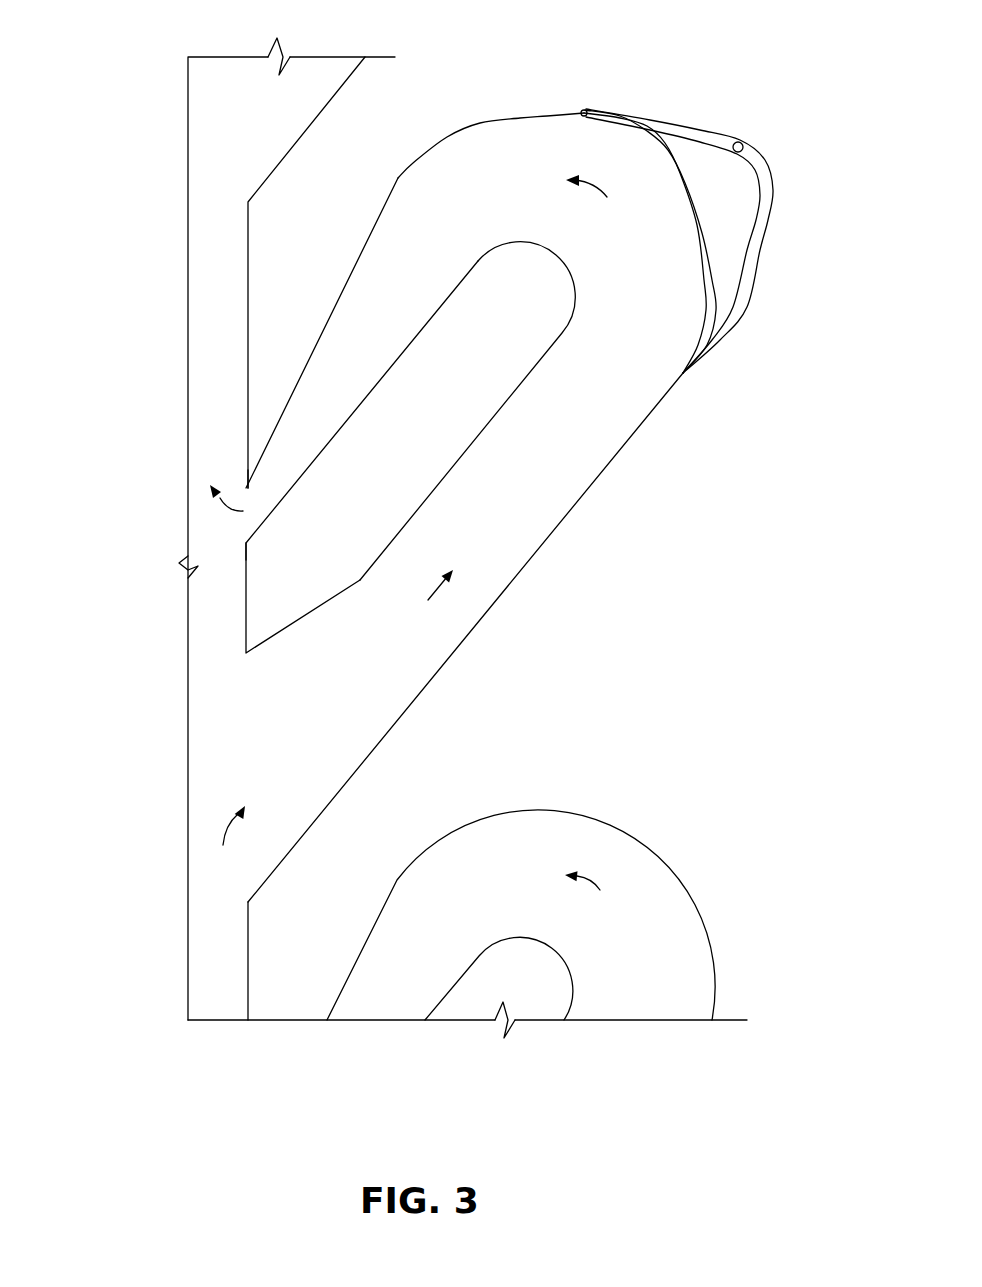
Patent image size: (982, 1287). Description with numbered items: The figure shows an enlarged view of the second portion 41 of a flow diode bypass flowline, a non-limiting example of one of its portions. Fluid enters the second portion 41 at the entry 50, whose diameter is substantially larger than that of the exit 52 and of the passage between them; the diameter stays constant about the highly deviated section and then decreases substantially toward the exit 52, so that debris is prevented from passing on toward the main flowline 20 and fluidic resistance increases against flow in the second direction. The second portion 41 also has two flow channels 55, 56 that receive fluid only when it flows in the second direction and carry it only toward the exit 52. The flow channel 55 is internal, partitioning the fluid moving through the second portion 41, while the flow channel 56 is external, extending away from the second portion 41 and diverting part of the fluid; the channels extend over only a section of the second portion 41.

The main flowline 20 is at (217, 372).
The second portion 41 is at (602, 503).
The entry 50 is at (253, 748).
The exit 52 is at (240, 525).
The flow channel 55 is at (641, 146).
The flow channel 56 is at (700, 137).